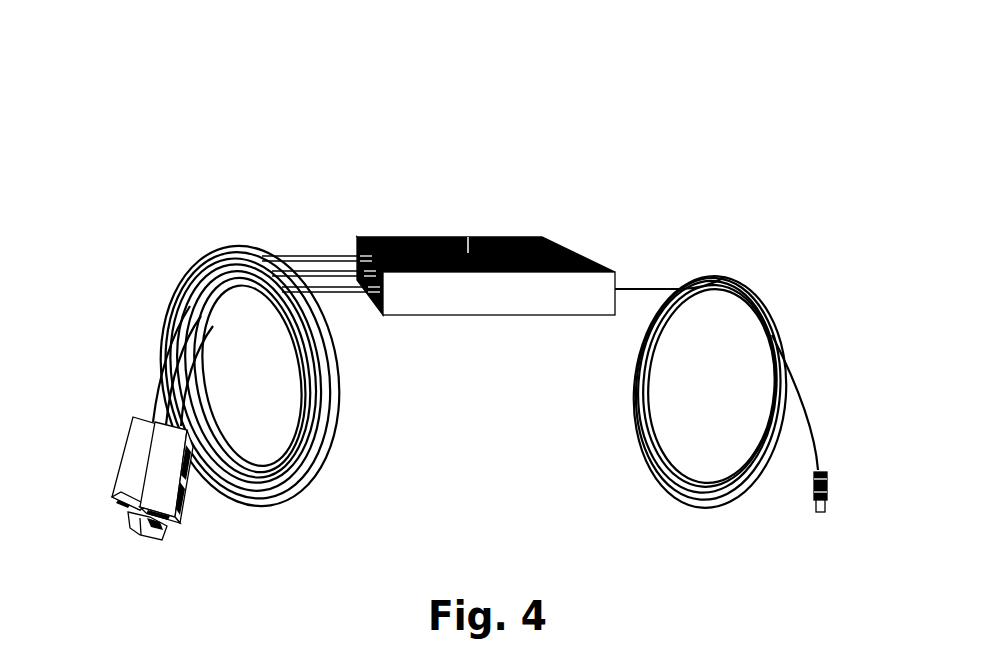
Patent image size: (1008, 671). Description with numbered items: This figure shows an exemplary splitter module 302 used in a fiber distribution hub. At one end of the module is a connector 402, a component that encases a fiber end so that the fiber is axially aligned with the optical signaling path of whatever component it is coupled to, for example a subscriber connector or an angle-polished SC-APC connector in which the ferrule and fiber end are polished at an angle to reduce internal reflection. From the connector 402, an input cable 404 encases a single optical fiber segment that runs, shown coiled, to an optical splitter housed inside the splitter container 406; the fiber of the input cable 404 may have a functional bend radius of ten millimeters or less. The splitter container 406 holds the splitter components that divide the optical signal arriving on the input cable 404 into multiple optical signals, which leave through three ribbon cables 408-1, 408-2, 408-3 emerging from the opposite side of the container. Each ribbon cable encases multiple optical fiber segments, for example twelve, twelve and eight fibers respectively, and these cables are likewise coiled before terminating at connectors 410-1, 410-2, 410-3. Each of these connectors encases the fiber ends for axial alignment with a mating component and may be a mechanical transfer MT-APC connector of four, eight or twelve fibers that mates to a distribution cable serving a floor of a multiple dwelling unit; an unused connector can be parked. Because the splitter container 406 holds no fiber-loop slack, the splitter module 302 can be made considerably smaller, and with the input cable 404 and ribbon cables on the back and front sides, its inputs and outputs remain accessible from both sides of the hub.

The splitter module 302 is at (466, 72).
The connector 402 is at (828, 487).
The input cable 404 is at (647, 289).
The splitter container 406 is at (468, 237).
The ribbon cable 408-1 is at (289, 258).
The ribbon cable 408-2 is at (316, 273).
The ribbon cable 408-3 is at (343, 289).
The connector 410-1 is at (130, 460).
The connector 410-2 is at (148, 535).
The connector 410-3 is at (183, 473).